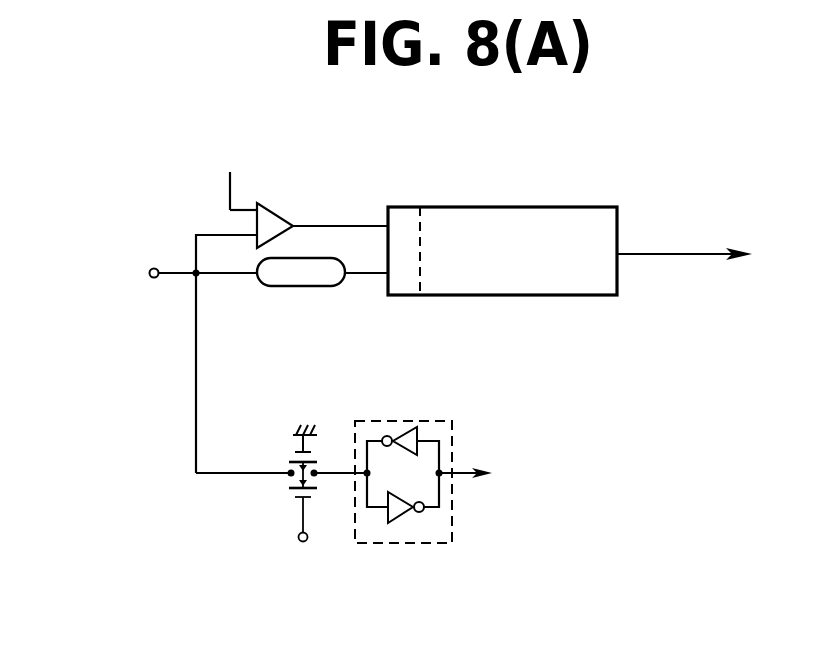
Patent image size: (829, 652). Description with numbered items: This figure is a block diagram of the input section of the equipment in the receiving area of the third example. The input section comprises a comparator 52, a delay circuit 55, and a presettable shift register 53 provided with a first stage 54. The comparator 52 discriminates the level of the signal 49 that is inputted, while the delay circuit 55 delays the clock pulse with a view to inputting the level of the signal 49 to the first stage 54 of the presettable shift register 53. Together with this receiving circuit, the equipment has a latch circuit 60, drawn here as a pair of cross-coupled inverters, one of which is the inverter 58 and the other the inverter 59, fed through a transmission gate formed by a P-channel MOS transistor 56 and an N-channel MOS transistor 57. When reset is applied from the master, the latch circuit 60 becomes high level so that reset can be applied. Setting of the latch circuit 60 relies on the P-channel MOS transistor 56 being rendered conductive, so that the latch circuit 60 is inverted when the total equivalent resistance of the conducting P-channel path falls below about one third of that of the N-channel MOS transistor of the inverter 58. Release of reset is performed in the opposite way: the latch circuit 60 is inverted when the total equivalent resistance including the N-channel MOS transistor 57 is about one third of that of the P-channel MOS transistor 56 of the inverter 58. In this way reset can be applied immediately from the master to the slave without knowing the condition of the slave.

The signal 49 is at (149, 272).
The comparator 52 is at (275, 208).
The presettable shift register 53 is at (508, 208).
The first stage 54 is at (402, 208).
The delay circuit 55 is at (295, 288).
The P-channel MOS transistor 56 is at (315, 448).
The N-channel MOS transistor 57 is at (285, 486).
The inverter 58 is at (402, 429).
The inverter 59 is at (400, 521).
The latch circuit 60 is at (445, 476).